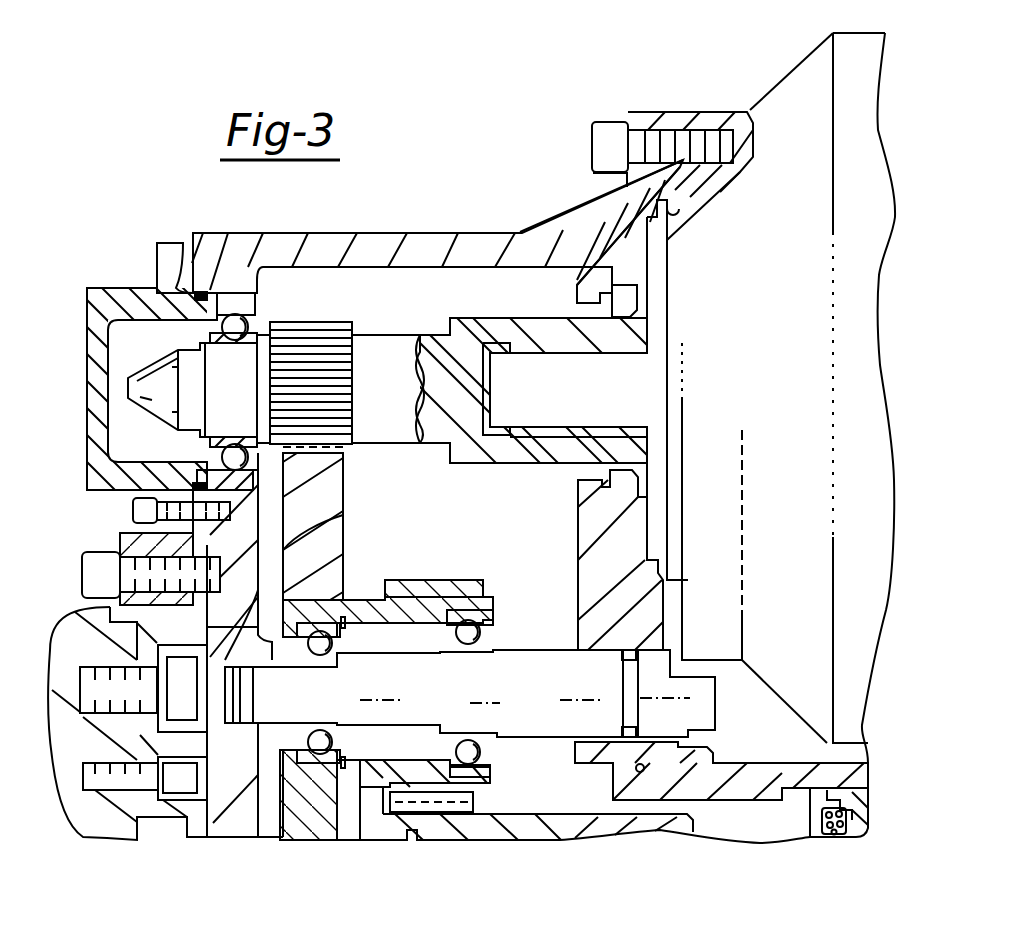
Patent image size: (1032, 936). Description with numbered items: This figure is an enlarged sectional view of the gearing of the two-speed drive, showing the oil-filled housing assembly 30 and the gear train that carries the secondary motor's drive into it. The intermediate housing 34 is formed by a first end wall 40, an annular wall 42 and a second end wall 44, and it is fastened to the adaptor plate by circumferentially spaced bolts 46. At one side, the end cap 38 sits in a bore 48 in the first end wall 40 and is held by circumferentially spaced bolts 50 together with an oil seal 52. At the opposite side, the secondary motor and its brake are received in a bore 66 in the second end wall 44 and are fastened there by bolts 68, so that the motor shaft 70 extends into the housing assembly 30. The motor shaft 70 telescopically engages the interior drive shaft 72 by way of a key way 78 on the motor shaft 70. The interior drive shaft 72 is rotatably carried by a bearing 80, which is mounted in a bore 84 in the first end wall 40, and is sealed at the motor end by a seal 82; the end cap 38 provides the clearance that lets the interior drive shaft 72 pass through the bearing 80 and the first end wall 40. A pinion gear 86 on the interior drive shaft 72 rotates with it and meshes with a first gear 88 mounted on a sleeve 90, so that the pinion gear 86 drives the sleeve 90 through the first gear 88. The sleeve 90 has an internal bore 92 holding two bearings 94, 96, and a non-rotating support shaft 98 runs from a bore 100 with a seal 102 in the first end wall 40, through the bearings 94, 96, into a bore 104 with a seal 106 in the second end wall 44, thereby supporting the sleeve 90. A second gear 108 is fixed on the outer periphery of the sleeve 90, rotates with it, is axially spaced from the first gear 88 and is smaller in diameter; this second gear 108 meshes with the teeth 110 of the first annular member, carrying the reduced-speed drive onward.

The housing assembly 30 is at (637, 527).
The intermediate housing 34 is at (200, 235).
The end cap 38 is at (87, 340).
The first end wall 40 is at (220, 828).
The annular wall 42 is at (410, 233).
The second end wall 44 is at (667, 598).
The bolts 46 is at (80, 575).
The bore 48 is at (215, 300).
The bolts 50 is at (133, 510).
The oil seal 52 is at (167, 246).
The bore 66 is at (675, 207).
The bolts 68 is at (592, 140).
The motor shaft 70 is at (650, 377).
The interior drive shaft 72 is at (475, 327).
The key way 78 is at (627, 430).
The bearing 80 is at (213, 455).
The seal 82 is at (623, 290).
The bore 84 is at (248, 318).
The pinion gear 86 is at (340, 327).
The first gear 88 is at (340, 495).
The sleeve 90 is at (357, 600).
The internal bore 92 is at (357, 838).
The bearing 94 is at (330, 641).
The bearing 96 is at (458, 630).
The support shaft 98 is at (527, 733).
The bore 100 is at (343, 521).
The seal 102 is at (203, 800).
The bore 104 is at (650, 650).
The seal 106 is at (653, 640).
The second gear 108 is at (457, 587).
The teeth 110 is at (473, 800).